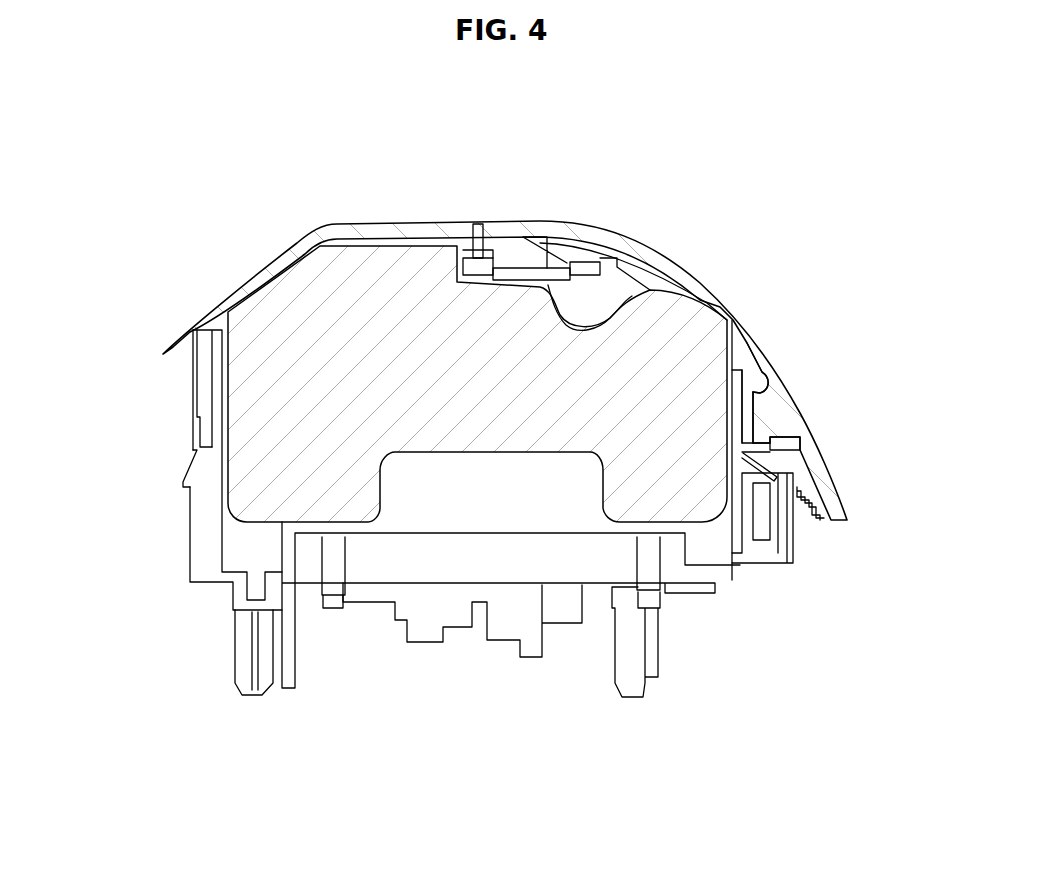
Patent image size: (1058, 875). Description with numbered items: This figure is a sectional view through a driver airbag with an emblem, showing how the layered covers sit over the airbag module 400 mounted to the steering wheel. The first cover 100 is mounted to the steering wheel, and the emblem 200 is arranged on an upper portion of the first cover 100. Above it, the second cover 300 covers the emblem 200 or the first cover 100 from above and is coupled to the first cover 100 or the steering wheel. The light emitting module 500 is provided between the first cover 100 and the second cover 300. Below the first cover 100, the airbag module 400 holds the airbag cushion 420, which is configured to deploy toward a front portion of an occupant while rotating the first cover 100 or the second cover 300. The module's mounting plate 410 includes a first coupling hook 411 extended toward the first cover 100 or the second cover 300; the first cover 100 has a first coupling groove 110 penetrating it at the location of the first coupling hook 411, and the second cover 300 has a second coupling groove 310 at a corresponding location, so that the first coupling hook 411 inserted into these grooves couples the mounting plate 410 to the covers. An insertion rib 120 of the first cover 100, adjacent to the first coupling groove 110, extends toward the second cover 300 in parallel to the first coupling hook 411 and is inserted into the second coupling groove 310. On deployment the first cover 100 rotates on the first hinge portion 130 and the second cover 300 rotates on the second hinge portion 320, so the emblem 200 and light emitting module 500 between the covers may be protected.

The first cover 100 is at (372, 222).
The first coupling groove 110 is at (793, 538).
The insertion rib 120 is at (800, 443).
The first hinge portion 130 is at (765, 378).
The emblem 200 is at (538, 235).
The second cover 300 is at (700, 302).
The second coupling groove 310 is at (775, 462).
The second hinge portion 320 is at (772, 388).
The airbag module 400 is at (462, 650).
The mounting plate 410 is at (714, 545).
The first coupling hook 411 is at (815, 485).
The airbag cushion 420 is at (310, 333).
The light emitting module 500 is at (618, 305).